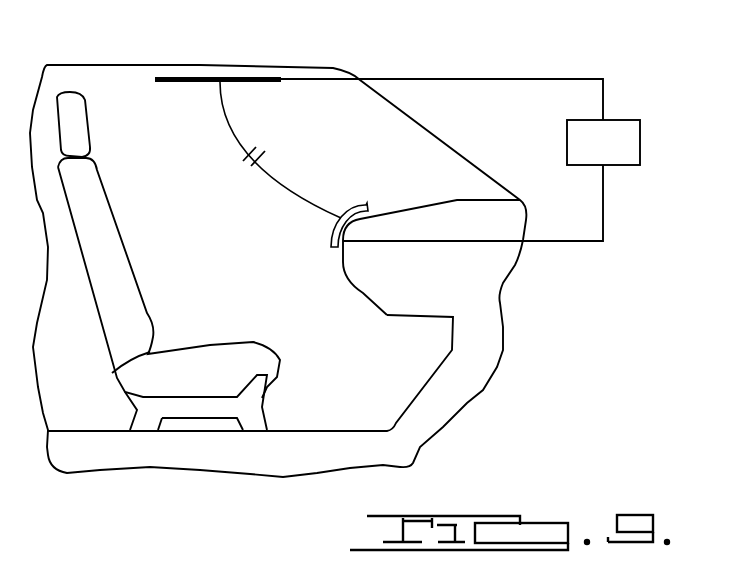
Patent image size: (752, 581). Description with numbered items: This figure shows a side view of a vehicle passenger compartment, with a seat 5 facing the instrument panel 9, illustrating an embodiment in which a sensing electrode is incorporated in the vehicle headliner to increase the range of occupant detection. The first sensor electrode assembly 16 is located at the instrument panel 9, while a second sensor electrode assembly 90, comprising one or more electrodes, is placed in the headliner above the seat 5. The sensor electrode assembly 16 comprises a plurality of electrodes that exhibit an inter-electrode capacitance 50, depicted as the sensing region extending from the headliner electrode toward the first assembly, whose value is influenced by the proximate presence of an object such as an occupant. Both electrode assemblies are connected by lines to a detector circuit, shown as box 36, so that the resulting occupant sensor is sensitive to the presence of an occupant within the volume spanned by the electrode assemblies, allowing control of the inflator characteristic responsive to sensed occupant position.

The vehicle seat 5 is at (118, 272).
The instrument panel 9 is at (418, 207).
The sensor electrode assembly 16 is at (353, 205).
The controller 36 is at (621, 157).
The inter-electrode capacitance 50 is at (267, 148).
The second sensor electrode assembly 90 is at (241, 80).